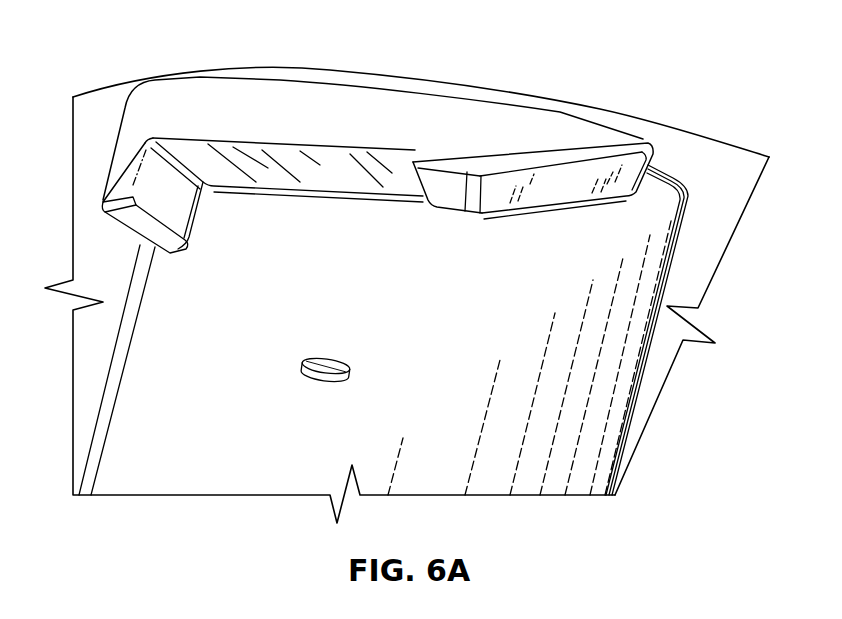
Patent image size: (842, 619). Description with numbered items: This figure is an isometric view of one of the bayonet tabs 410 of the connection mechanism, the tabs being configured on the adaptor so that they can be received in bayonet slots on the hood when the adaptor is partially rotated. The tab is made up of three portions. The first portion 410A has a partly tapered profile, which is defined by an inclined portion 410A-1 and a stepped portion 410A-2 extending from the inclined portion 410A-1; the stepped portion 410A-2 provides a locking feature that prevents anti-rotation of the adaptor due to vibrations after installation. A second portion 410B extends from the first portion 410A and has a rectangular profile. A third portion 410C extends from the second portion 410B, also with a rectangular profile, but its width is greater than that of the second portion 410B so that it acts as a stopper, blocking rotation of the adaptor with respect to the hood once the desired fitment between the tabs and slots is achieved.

The bayonet tab 410 is at (128, 64).
The first portion 410A is at (526, 149).
The inclined portion 410A-1 is at (647, 198).
The stepped portion 410A-2 is at (484, 165).
The second portion 410B is at (425, 201).
The third portion 410C is at (156, 238).